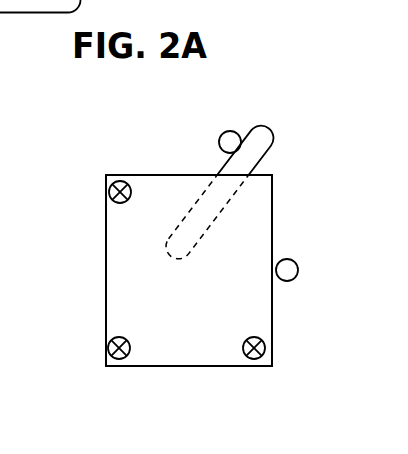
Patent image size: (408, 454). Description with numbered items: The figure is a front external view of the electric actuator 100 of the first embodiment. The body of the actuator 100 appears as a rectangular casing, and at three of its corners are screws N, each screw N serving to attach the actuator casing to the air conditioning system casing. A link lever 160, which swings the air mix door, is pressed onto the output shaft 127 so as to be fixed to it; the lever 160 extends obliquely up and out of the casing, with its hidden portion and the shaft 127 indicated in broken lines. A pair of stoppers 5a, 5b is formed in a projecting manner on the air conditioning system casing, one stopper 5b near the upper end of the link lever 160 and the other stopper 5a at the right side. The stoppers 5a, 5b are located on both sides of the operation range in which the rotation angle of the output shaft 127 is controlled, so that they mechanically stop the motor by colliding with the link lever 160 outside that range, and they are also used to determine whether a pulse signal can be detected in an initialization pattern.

The electric actuator 100 is at (105, 264).
The screw N is at (109, 191).
The stopper 5a is at (298, 268).
The stopper 5b is at (219, 139).
The link lever 160 is at (268, 135).
The output shaft 127 is at (195, 227).